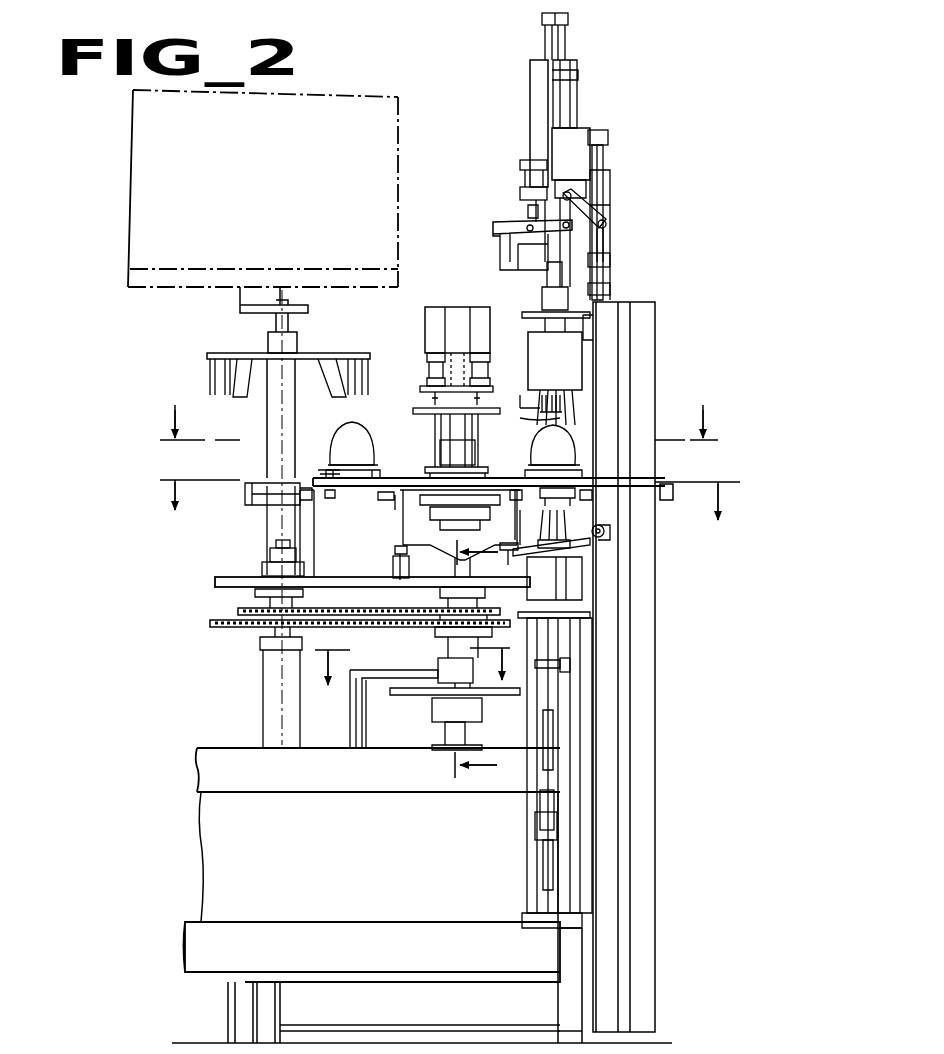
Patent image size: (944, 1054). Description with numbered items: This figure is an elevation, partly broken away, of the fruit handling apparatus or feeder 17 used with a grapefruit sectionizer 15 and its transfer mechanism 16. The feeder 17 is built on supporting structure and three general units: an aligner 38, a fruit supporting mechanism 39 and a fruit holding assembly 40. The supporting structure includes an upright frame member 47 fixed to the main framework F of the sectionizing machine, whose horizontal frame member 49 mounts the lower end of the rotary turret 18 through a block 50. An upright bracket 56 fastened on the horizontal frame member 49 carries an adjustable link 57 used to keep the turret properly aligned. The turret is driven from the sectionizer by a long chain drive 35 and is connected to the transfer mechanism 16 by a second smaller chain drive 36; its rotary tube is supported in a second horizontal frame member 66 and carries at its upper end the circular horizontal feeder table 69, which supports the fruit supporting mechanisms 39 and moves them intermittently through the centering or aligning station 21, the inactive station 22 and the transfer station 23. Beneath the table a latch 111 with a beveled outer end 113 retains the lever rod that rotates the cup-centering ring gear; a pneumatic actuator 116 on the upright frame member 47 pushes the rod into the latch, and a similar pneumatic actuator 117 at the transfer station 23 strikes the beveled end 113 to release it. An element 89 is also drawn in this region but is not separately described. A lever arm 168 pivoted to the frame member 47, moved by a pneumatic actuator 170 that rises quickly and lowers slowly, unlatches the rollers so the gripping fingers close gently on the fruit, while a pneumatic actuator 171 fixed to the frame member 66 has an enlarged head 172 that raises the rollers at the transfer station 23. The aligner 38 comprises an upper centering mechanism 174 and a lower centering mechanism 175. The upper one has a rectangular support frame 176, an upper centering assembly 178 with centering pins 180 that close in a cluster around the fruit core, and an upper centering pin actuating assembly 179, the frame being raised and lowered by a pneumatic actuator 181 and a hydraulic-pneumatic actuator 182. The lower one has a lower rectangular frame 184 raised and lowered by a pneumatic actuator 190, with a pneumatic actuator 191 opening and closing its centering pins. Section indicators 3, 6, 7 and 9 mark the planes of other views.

The grapefruit sectionizer 15 is at (126, 135).
The transfer mechanism 16 is at (200, 363).
The fruit handling apparatus or feeder 17 is at (230, 548).
The rotary turret 18 is at (322, 481).
The centering or aligning station 21 is at (590, 457).
The inactive station 22 is at (432, 441).
The transfer station 23 is at (326, 469).
The long chain drive 35 is at (215, 625).
The second smaller chain drive 36 is at (245, 604).
The aligner 38 is at (596, 161).
The fruit supporting mechanism 39 is at (330, 468).
The fruit holding assembly 40 is at (415, 383).
The upright frame member 47 is at (640, 322).
The horizontal frame member 49 is at (195, 777).
The block 50 is at (440, 745).
The upright bracket 56 is at (348, 722).
The adjustable link 57 is at (408, 672).
The second horizontal frame member 66 is at (224, 578).
The horizontal feeder table 69 is at (399, 481).
The lever 89 is at (578, 530).
The latch 111 is at (575, 514).
The beveled outer end 113 is at (592, 494).
The pneumatic actuator 116 is at (666, 483).
The pneumatic actuator 117 is at (250, 506).
The lever arm 168 is at (578, 548).
The pneumatic actuator 170 is at (572, 665).
The pneumatic actuator 171 is at (392, 570).
The enlarged head 172 is at (392, 546).
The upper centering mechanism 174 is at (598, 128).
The lower centering mechanism 175 is at (568, 722).
The rectangular support frame 176 is at (532, 103).
The upper centering assembly 178 is at (590, 373).
The upper centering pin actuating assembly 179 is at (522, 205).
The centering pins 180 is at (522, 412).
The pneumatic actuator 181 is at (604, 268).
The hydraulic-pneumatic actuator 182 is at (606, 151).
The lower rectangular frame 184 is at (538, 828).
The pneumatic actuator 190 is at (550, 864).
The pneumatic actuator 191 is at (545, 808).
The main framework F is at (188, 944).
The section line 3 is at (439, 432).
The section line 6 is at (445, 500).
The section line 7 is at (412, 666).
The section line 9 is at (462, 659).